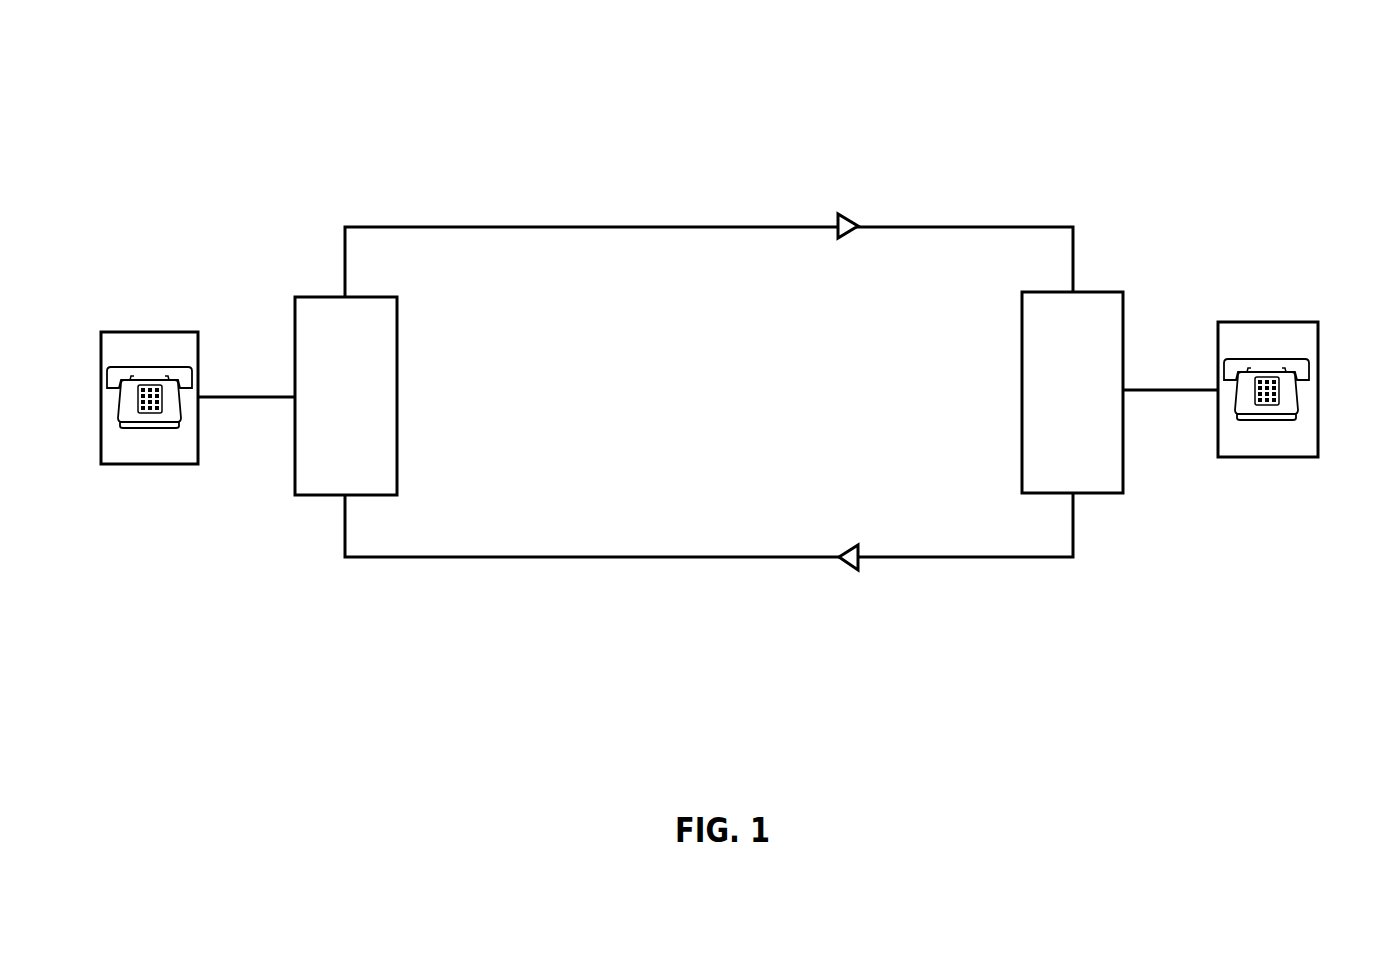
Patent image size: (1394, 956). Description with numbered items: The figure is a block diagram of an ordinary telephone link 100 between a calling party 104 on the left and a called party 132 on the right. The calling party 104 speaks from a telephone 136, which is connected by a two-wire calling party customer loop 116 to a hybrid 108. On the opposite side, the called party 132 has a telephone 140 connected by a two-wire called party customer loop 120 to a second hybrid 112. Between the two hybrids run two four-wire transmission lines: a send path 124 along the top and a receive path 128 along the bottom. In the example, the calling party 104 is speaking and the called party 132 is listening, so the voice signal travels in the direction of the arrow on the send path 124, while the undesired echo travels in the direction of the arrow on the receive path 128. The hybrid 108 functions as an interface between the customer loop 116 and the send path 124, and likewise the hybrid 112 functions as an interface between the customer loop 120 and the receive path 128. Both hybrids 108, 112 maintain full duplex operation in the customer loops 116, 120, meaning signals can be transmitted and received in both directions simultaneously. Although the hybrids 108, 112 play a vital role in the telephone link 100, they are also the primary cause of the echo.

The telephone link 100 is at (685, 64).
The calling party 104 is at (154, 376).
The hybrid 108 is at (397, 320).
The hybrid 112 is at (1022, 315).
The two-wire calling party customer loop 116 is at (222, 397).
The two-wire called party customer loop 120 is at (1142, 390).
The send path 124 is at (673, 226).
The receive path 128 is at (655, 558).
The called party 132 is at (1297, 381).
The telephone 136 is at (135, 428).
The telephone 140 is at (1258, 420).